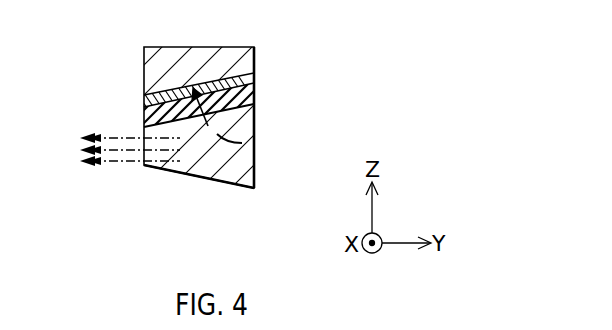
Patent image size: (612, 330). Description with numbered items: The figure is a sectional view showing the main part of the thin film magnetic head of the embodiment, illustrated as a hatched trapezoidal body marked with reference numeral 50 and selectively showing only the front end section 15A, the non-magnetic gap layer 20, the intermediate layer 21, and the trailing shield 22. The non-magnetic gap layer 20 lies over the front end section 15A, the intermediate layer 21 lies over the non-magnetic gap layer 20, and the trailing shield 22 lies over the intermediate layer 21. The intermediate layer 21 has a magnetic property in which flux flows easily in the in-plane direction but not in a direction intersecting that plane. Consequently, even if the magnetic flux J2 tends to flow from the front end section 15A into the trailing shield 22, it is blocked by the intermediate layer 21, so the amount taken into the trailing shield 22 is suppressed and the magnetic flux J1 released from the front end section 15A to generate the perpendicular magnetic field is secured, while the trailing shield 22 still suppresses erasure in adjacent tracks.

The light guide plate / optical element 50 is at (140, 83).
The trailing shield 22 is at (248, 60).
The intermediate layer 21 is at (243, 82).
The non-magnetic gap layer 20 is at (246, 100).
The front end section 15A is at (242, 143).
The magnetic flux J1 is at (120, 166).
The magnetic flux J2 is at (220, 138).